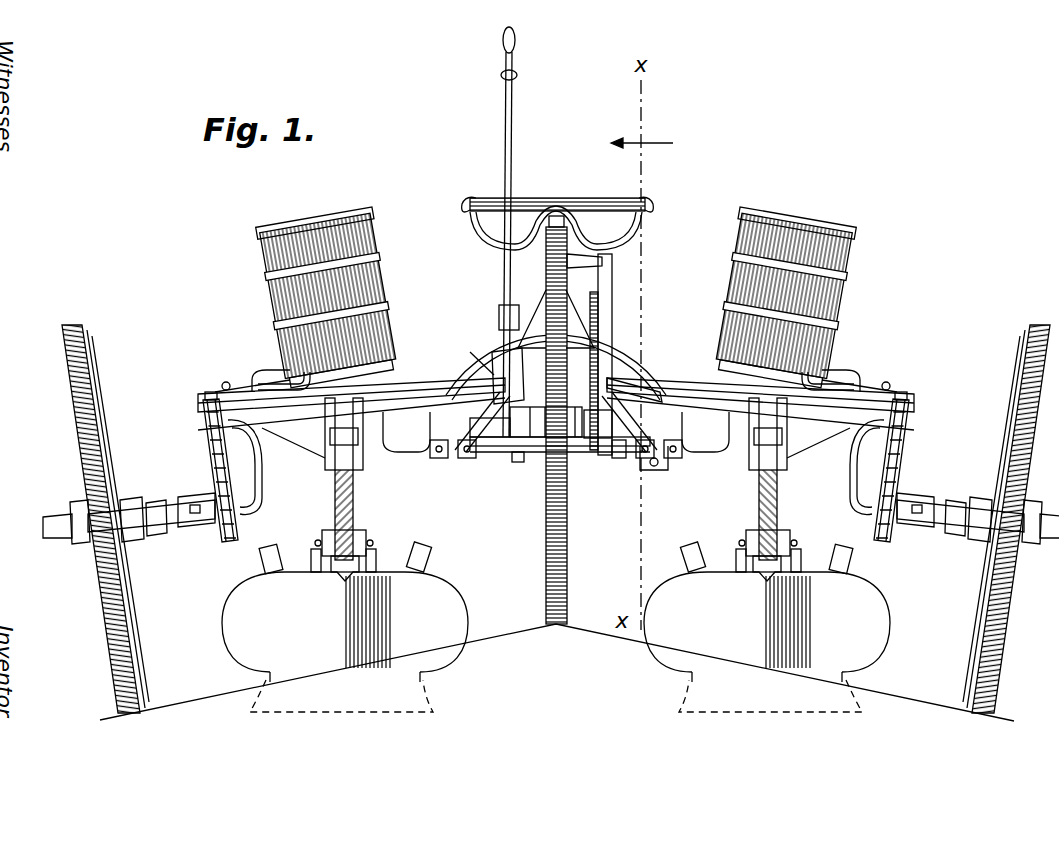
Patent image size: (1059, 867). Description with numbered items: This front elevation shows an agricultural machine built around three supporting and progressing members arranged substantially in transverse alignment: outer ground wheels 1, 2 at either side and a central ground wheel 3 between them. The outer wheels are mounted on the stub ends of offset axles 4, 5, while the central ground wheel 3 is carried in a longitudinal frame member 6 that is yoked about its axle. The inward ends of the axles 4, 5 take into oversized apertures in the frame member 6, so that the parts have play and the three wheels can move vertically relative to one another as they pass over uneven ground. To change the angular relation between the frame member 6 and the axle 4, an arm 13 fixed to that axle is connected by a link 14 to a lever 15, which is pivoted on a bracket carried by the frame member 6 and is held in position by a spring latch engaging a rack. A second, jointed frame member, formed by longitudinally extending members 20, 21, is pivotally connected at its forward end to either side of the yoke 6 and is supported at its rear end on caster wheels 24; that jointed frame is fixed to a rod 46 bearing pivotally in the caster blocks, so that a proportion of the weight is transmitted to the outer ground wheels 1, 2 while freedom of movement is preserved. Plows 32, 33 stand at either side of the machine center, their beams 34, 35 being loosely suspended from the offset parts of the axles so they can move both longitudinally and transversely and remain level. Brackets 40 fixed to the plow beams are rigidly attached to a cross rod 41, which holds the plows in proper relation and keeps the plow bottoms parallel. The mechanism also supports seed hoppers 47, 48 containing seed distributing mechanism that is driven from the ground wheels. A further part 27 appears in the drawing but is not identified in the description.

The ground wheel 1 is at (998, 634).
The ground wheel 2 is at (100, 607).
The central ground wheel 3 is at (570, 533).
The offset axle 4 is at (866, 484).
The offset axle 5 is at (248, 492).
The frame member 6 is at (505, 350).
The arm 13 is at (622, 458).
The link 14 is at (628, 382).
The lever 15 is at (612, 292).
The longitudinally extending member 20 is at (652, 470).
The longitudinally extending member 21 is at (482, 452).
The caster wheels 24 is at (262, 566).
The lever rod 27 is at (508, 176).
The plow 32 is at (445, 592).
The plow 33 is at (878, 608).
The plow beam 34 is at (353, 497).
The plow beam 35 is at (782, 508).
The brackets 40 is at (385, 455).
The cross rod 41 is at (490, 356).
The rod 46 is at (518, 462).
The seed hopper 47 is at (838, 298).
The seed hopper 48 is at (272, 306).